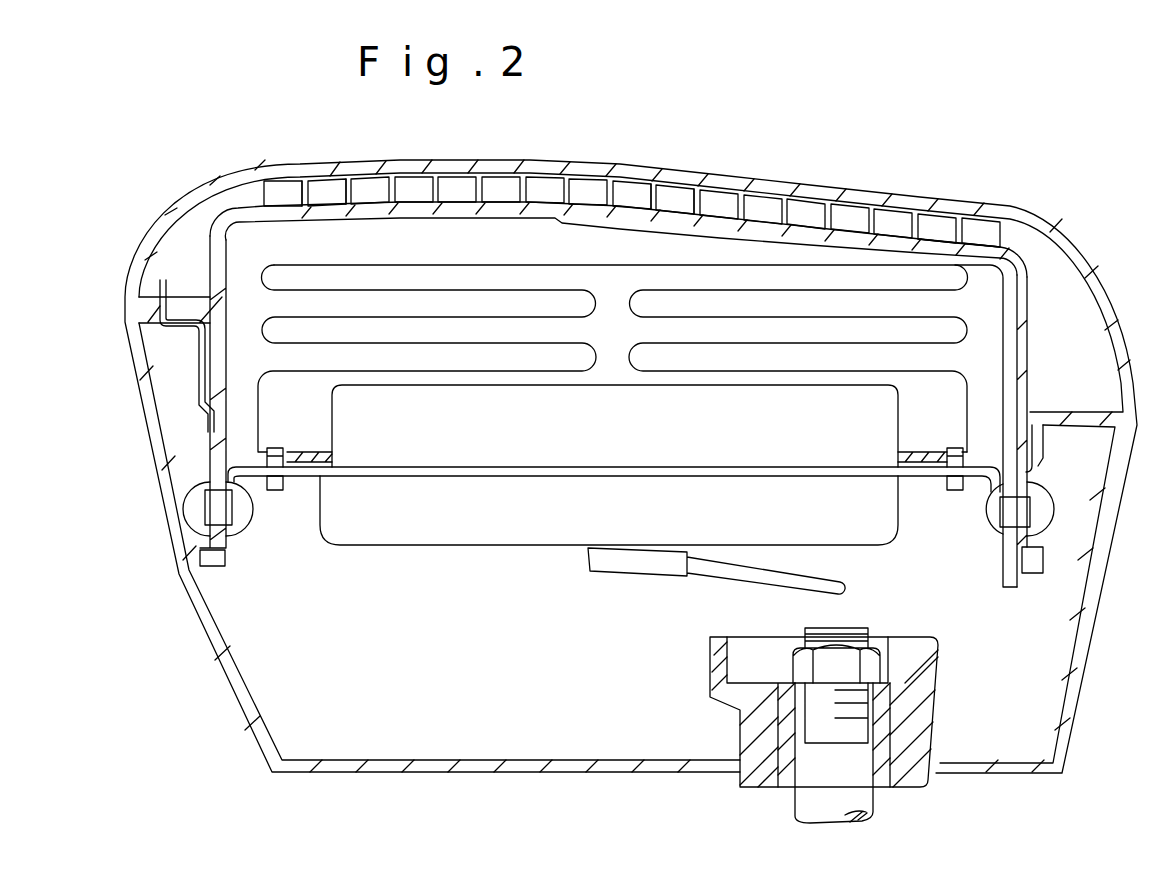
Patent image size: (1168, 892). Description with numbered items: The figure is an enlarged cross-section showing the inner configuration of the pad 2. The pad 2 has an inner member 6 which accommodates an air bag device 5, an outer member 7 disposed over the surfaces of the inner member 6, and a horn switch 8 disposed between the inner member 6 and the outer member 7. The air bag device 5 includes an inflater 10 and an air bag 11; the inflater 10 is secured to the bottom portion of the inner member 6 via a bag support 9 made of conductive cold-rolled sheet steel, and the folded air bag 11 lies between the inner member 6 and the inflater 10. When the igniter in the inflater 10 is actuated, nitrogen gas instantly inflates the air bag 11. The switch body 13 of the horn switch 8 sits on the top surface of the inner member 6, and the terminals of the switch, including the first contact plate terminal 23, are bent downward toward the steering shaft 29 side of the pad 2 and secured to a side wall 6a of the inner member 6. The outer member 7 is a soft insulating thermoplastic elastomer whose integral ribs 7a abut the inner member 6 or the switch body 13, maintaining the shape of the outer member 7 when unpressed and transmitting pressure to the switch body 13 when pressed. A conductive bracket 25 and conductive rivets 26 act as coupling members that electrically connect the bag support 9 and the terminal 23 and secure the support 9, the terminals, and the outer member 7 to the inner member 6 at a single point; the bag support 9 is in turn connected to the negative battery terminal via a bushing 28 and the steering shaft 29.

The pad 2 is at (1087, 219).
The air bag device 5 is at (437, 568).
The inner member 6 is at (1013, 582).
The side wall 6a is at (1003, 335).
The outer member 7 is at (643, 170).
The ribs 7a is at (378, 212).
The horn switch 8 is at (770, 200).
The bag support 9 is at (243, 477).
The inflater 10 is at (512, 545).
The air bag 11 is at (417, 266).
The switch body 13 is at (943, 230).
The first contact plate terminal 23 is at (1027, 335).
The bracket 25 is at (1046, 448).
The rivets 26 is at (1037, 500).
The bushing 28 is at (938, 656).
The steering shaft 29 is at (870, 800).